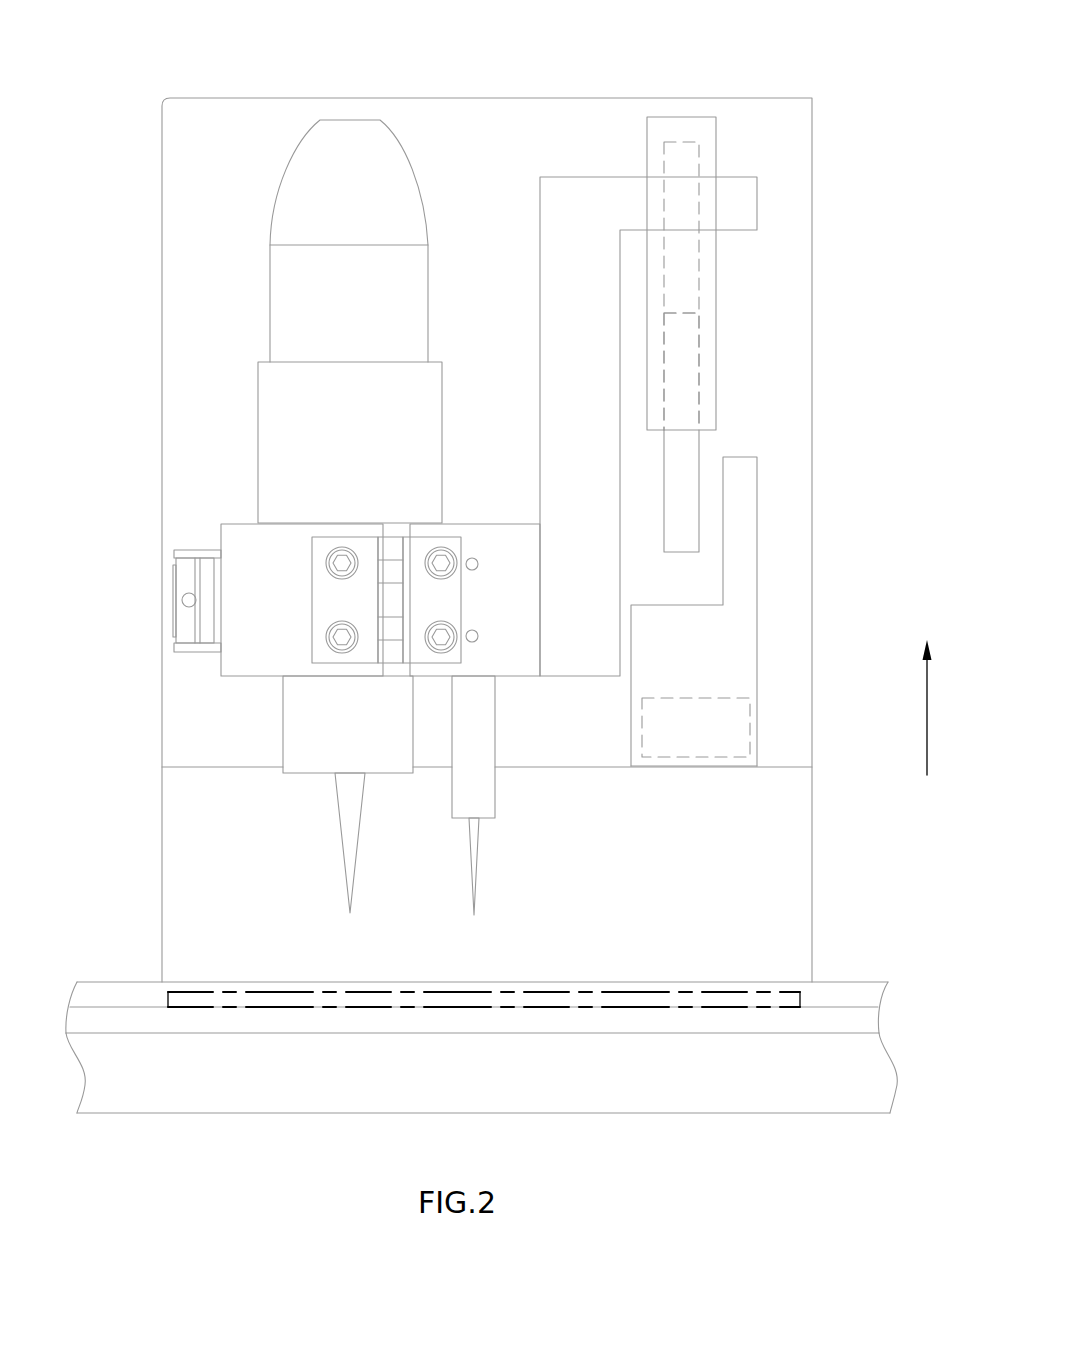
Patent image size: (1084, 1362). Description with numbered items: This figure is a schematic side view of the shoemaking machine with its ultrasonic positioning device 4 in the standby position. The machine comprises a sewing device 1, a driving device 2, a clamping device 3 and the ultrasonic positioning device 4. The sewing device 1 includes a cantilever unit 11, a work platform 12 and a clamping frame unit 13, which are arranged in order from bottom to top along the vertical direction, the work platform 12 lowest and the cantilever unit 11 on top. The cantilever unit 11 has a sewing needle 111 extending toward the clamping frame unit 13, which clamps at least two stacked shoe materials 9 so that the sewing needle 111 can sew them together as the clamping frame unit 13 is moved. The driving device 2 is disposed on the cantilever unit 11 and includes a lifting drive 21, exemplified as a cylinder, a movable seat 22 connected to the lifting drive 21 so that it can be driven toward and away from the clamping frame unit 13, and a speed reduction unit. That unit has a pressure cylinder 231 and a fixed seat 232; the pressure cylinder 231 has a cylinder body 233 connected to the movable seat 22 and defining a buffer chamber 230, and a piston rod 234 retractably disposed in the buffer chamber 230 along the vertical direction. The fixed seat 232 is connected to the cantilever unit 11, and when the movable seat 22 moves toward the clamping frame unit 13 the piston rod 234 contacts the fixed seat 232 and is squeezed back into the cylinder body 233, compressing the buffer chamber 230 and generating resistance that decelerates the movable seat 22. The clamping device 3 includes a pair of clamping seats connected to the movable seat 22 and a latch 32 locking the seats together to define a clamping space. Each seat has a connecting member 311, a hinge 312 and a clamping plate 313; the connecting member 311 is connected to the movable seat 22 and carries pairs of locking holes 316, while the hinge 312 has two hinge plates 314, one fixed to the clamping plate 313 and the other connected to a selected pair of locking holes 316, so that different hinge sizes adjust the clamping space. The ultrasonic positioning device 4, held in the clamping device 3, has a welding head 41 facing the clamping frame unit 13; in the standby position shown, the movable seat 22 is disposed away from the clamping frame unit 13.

The sewing device 1 is at (815, 122).
The cantilever unit 11 is at (812, 193).
The work platform 12 is at (755, 1078).
The clamping frame unit 13 is at (832, 995).
The driving device 2 is at (767, 452).
The lifting drive 21 is at (750, 715).
The movable seat 22 is at (540, 212).
The buffer chamber 230 is at (700, 270).
The pressure cylinder 231 is at (702, 125).
The fixed seat 232 is at (755, 739).
The cylinder body 233 is at (708, 333).
The piston rod 234 is at (688, 533).
The clamping device 3 is at (205, 549).
The connecting member 311 is at (510, 665).
The hinge 312 is at (392, 537).
The clamping plate 313 is at (245, 653).
The hinge plate 314 is at (448, 602).
The locking hole 316 is at (474, 556).
The latch 32 is at (202, 653).
The ultrasonic positioning device 4 is at (302, 147).
The welding head 41 is at (340, 843).
The sewing needle 111 is at (478, 860).
The shoe material 9 is at (686, 985).